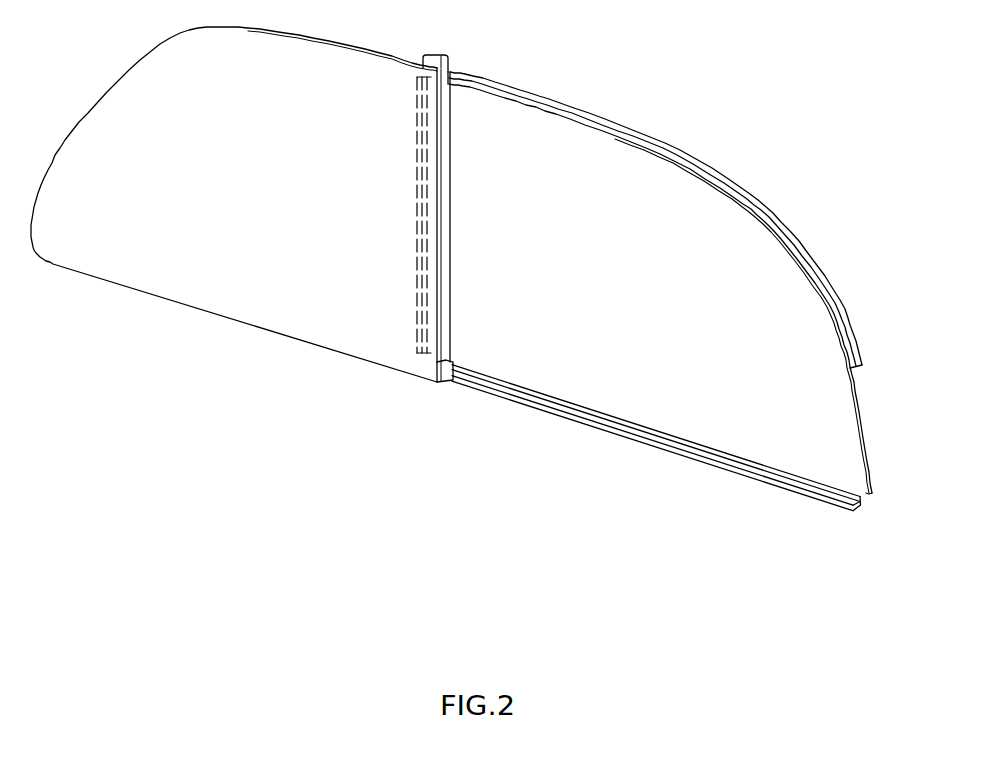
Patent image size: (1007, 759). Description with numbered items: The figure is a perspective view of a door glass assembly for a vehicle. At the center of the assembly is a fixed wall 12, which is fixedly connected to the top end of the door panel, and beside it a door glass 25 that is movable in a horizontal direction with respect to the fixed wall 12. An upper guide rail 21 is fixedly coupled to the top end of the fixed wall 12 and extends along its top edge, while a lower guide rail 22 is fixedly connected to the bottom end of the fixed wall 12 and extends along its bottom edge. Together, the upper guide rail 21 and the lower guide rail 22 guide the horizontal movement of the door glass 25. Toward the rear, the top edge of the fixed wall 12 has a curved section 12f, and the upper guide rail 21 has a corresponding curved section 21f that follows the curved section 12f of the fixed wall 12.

The fixed wall 12 is at (857, 461).
The curved section of the fixed wall 12f is at (864, 401).
The upper guide rail 21 is at (620, 125).
The curved section of the upper guide rail 21f is at (797, 242).
The lower guide rail 22 is at (650, 440).
The door glass 25 is at (247, 310).